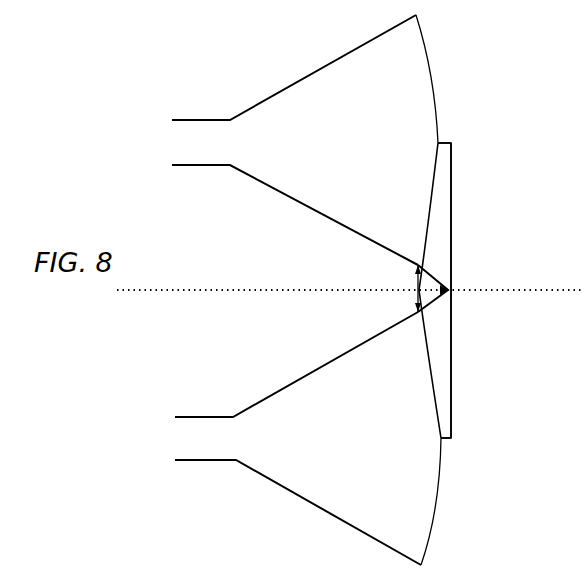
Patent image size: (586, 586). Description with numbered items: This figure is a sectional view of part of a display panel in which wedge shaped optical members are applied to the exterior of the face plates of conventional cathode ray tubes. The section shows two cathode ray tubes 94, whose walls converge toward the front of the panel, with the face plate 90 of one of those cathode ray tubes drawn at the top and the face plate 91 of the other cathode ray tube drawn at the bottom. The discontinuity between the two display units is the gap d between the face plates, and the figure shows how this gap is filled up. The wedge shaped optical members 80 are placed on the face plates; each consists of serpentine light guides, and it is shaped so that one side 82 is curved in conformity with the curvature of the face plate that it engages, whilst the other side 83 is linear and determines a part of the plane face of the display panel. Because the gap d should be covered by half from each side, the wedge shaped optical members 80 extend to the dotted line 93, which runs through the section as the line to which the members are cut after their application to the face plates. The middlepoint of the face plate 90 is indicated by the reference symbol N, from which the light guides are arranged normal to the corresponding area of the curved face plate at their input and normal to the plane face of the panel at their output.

The wedge shaped optical member 80 is at (450, 287).
The curved side of the wedge shaped optical member 82 is at (437, 165).
The linear side of the wedge shaped optical member 83 is at (451, 252).
The face plate of one cathode ray tube 90 is at (441, 76).
The face plate of the other cathode ray tube 91 is at (441, 481).
The dotted line 93 is at (232, 289).
The cathode ray tubes 94 is at (287, 100).
The middlepoint of the face plate N is at (440, 137).
The gap between the face plates d is at (416, 303).